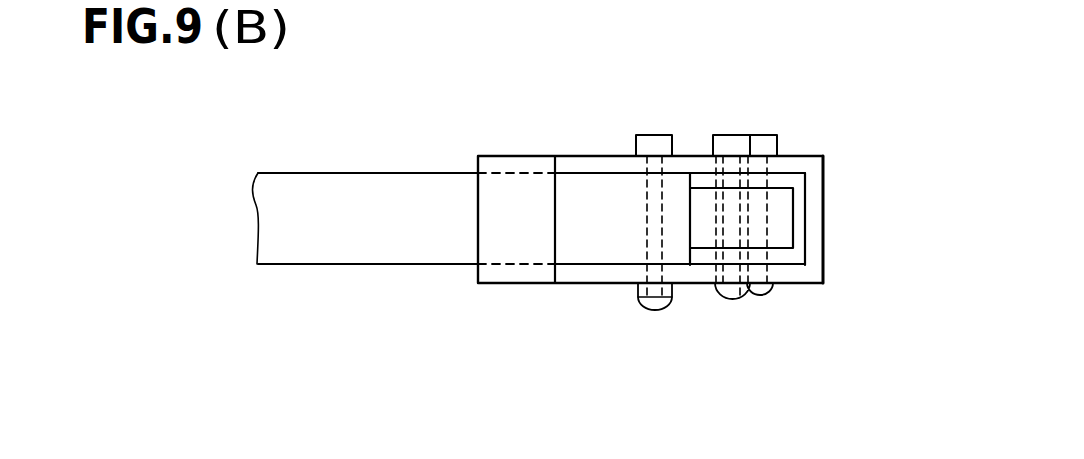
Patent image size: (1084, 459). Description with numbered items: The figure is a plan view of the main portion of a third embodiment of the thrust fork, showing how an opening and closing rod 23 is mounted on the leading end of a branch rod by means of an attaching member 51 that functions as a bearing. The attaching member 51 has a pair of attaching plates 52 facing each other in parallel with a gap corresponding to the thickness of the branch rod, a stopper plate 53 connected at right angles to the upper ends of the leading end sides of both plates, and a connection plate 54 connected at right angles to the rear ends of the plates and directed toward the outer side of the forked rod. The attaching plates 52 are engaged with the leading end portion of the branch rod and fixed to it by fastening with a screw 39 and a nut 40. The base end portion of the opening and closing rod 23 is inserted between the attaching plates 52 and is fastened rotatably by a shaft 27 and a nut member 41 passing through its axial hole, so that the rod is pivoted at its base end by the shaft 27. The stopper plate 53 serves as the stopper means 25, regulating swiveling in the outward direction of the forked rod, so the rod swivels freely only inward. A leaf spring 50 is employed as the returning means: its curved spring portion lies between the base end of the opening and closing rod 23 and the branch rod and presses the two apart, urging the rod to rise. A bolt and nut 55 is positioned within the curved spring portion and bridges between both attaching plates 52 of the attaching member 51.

The opening and closing rod 23 is at (318, 173).
The stopper means 25 is at (508, 146).
The shaft 27 is at (652, 135).
The screw 39 is at (770, 302).
The nut 40 is at (765, 135).
The nut member 41 is at (635, 290).
The leaf spring 50 is at (783, 217).
The attaching member 51 is at (835, 167).
The attaching plate 52 is at (795, 155).
The stopper plate 53 is at (492, 230).
The connection plate 54 is at (827, 247).
The bolt and nut 55 is at (728, 135).